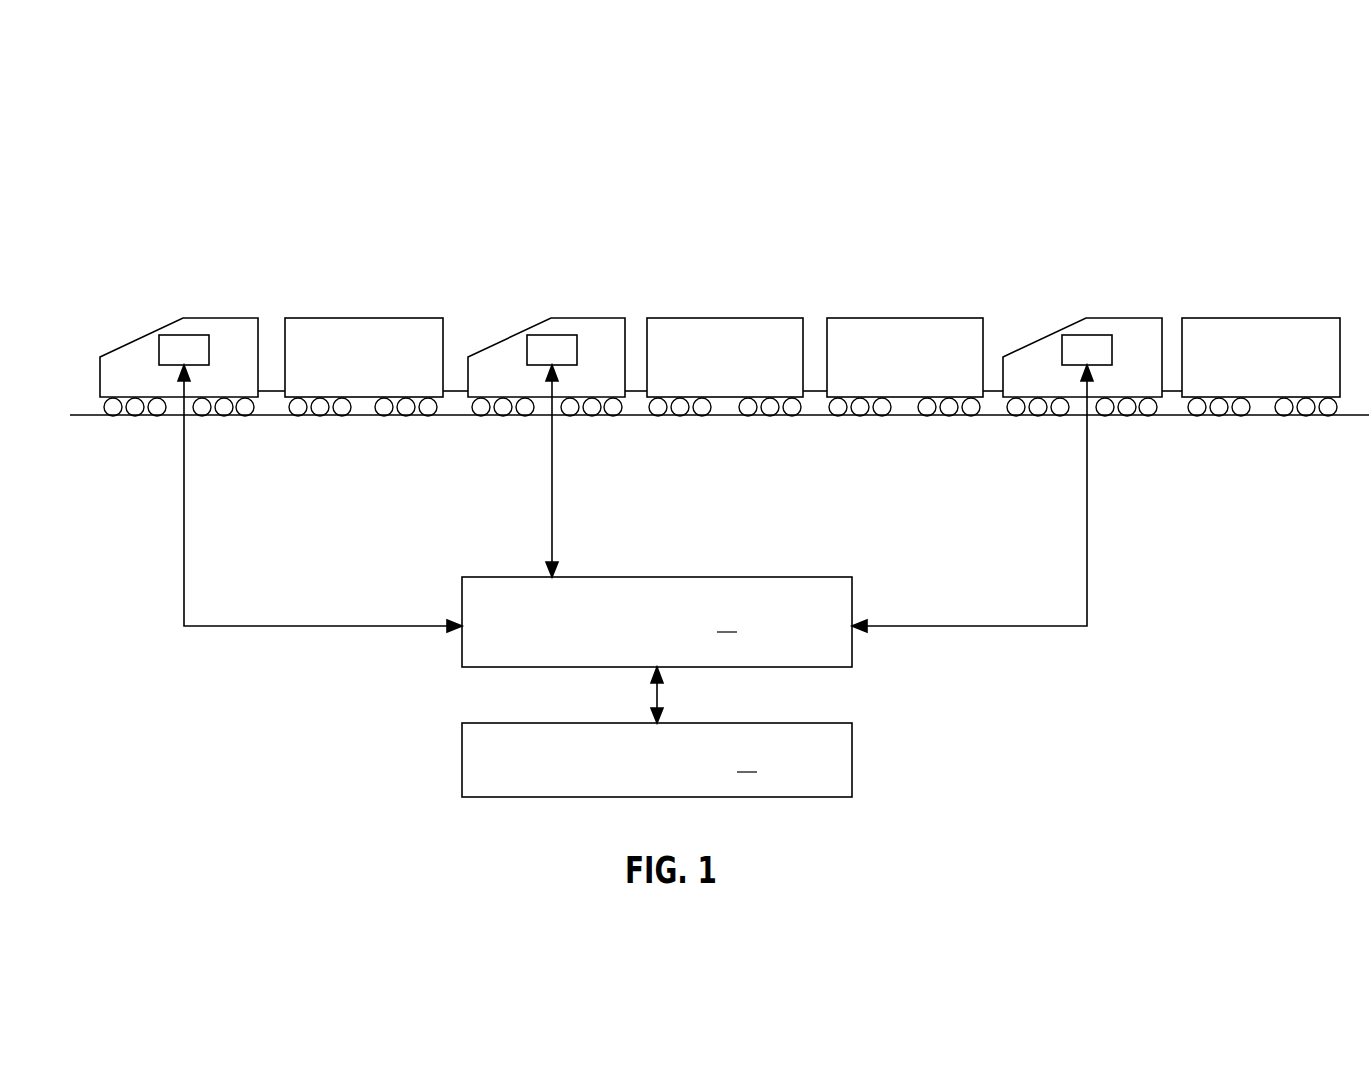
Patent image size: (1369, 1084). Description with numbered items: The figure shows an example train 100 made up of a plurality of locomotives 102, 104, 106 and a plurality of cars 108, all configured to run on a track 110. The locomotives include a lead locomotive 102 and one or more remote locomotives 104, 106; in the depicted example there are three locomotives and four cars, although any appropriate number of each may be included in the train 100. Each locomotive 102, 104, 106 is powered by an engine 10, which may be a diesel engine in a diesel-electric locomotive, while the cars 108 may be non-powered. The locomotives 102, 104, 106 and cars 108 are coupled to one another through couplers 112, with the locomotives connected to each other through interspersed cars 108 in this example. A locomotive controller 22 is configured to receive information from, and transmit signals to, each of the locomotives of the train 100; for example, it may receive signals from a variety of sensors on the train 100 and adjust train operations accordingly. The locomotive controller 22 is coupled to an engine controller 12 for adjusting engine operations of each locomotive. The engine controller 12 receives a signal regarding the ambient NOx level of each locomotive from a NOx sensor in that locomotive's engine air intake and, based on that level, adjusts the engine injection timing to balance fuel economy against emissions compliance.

The train 100 is at (1130, 132).
The lead locomotive 102 is at (200, 318).
The remote locomotive 104 is at (568, 318).
The remote locomotive 106 is at (1097, 318).
The car 108 is at (354, 318).
The track 110 is at (1298, 416).
The coupler 112 is at (267, 396).
The engine 10 is at (635, 350).
The engine controller 12 is at (657, 622).
The locomotive controller 22 is at (657, 760).